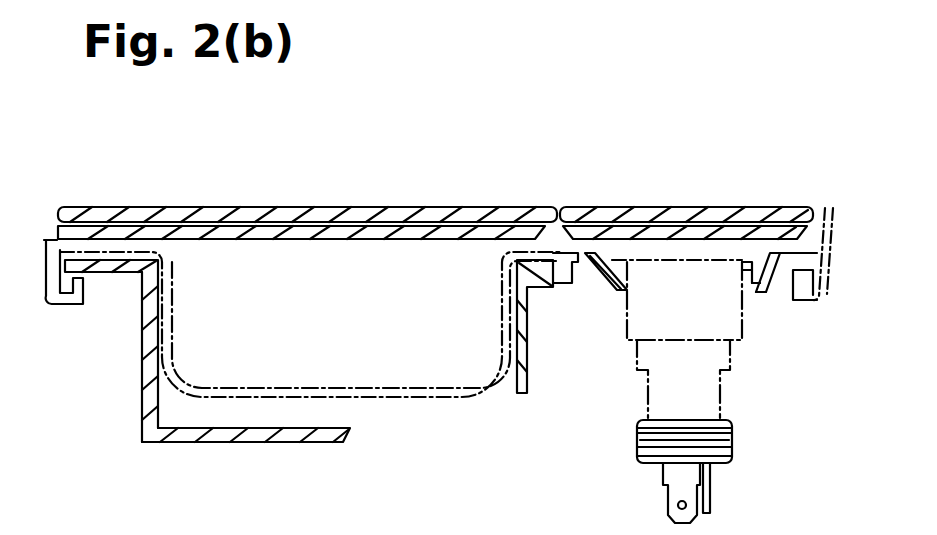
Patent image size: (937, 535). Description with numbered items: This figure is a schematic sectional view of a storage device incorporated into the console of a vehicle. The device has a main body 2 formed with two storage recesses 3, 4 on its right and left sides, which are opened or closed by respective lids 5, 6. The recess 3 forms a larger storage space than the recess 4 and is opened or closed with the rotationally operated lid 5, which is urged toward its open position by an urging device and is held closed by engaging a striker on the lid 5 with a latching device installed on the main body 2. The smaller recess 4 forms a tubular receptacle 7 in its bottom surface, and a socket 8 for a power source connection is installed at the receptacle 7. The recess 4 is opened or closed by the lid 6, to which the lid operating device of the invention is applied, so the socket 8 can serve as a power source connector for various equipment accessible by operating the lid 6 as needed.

The main body 2 is at (142, 386).
The recess 3 is at (350, 332).
The recess 4 is at (712, 250).
The lid 5 is at (242, 206).
The lid 6 is at (630, 205).
The tubular receptacle 7 is at (767, 262).
The socket 8 is at (723, 447).